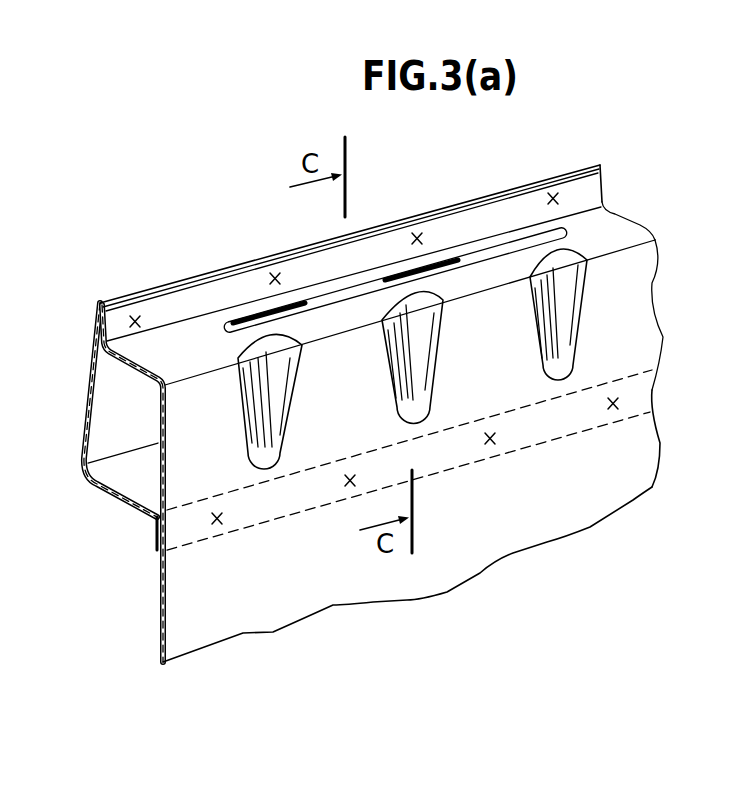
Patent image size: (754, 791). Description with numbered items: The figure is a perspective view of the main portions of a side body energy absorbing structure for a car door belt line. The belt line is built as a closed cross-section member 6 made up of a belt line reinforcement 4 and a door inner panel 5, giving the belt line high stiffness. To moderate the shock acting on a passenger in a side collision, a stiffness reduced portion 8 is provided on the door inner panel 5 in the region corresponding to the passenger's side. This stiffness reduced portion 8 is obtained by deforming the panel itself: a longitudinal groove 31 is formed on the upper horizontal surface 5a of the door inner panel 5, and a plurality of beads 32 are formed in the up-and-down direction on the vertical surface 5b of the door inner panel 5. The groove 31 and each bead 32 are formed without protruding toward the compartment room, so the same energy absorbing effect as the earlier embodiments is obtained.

The belt line reinforcement 4 is at (112, 420).
The door inner panel 5 is at (318, 603).
The upper horizontal surface 5a is at (622, 227).
The vertical surface 5b is at (633, 350).
The closed cross-section member 6 is at (128, 471).
The stiffness reduced portion 8 is at (620, 276).
The longitudinal groove 31 is at (496, 248).
The beads 32 is at (282, 390).